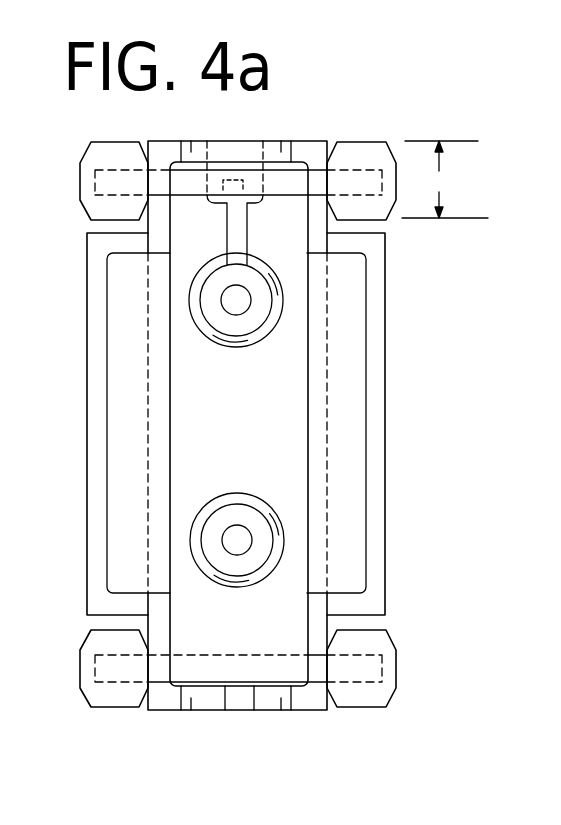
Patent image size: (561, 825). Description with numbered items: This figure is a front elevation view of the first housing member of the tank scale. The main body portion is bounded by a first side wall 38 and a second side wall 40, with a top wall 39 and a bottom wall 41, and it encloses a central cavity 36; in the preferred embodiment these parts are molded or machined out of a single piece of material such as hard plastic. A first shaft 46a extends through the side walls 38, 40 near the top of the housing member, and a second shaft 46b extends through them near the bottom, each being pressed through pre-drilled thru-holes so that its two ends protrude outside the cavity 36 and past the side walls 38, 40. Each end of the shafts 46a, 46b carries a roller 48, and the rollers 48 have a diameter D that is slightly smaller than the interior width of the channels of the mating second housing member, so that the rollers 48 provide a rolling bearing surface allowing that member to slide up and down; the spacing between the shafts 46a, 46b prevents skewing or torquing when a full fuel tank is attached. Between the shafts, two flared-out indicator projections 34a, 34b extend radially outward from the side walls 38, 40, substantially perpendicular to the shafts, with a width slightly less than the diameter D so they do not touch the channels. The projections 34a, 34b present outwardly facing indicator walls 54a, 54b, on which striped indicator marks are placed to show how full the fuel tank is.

The flared-out indicator projection 34a is at (93, 417).
The flared-out indicator projection 34b is at (380, 410).
The central cavity 36 is at (257, 418).
The first side wall 38 is at (172, 467).
The top wall 39 is at (277, 141).
The second side wall 40 is at (306, 503).
The bottom wall 41 is at (212, 710).
The first shaft 46a is at (104, 152).
The second shaft 46b is at (110, 703).
The roller 48 is at (358, 141).
The indicator wall 54a is at (85, 325).
The indicator wall 54b is at (387, 330).
The roller diameter D is at (445, 179).